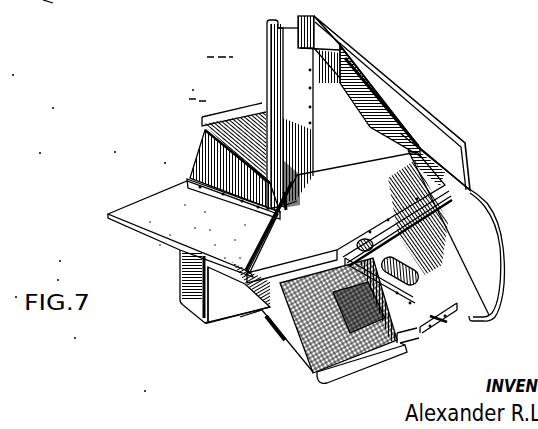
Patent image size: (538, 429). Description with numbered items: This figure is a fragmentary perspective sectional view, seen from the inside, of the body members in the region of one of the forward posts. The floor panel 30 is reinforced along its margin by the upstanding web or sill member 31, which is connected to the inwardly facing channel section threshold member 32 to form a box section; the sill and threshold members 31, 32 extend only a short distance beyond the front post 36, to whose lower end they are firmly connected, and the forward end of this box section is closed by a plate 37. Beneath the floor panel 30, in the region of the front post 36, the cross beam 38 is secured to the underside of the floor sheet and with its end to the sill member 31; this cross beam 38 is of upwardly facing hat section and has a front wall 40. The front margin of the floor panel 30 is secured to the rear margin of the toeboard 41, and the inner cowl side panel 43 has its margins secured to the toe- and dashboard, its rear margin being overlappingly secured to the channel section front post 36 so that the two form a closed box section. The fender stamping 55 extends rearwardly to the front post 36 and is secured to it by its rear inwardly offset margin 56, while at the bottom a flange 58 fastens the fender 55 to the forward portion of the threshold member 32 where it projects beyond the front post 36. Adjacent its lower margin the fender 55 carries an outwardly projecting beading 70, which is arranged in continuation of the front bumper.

The floor panel 30 is at (140, 208).
The sill member 31 is at (313, 335).
The threshold member 32 is at (400, 333).
The front post 36 is at (295, 20).
The plate 37 is at (320, 382).
The cross beam 38 is at (197, 321).
The front wall 40 is at (217, 328).
The toeboard 41 is at (366, 165).
The inner cowl side panel 43 is at (312, 80).
The fender stamping 55 is at (386, 76).
The rear inwardly offset margin 56 is at (318, 17).
The flange 58 is at (473, 311).
The beading 70 is at (488, 296).